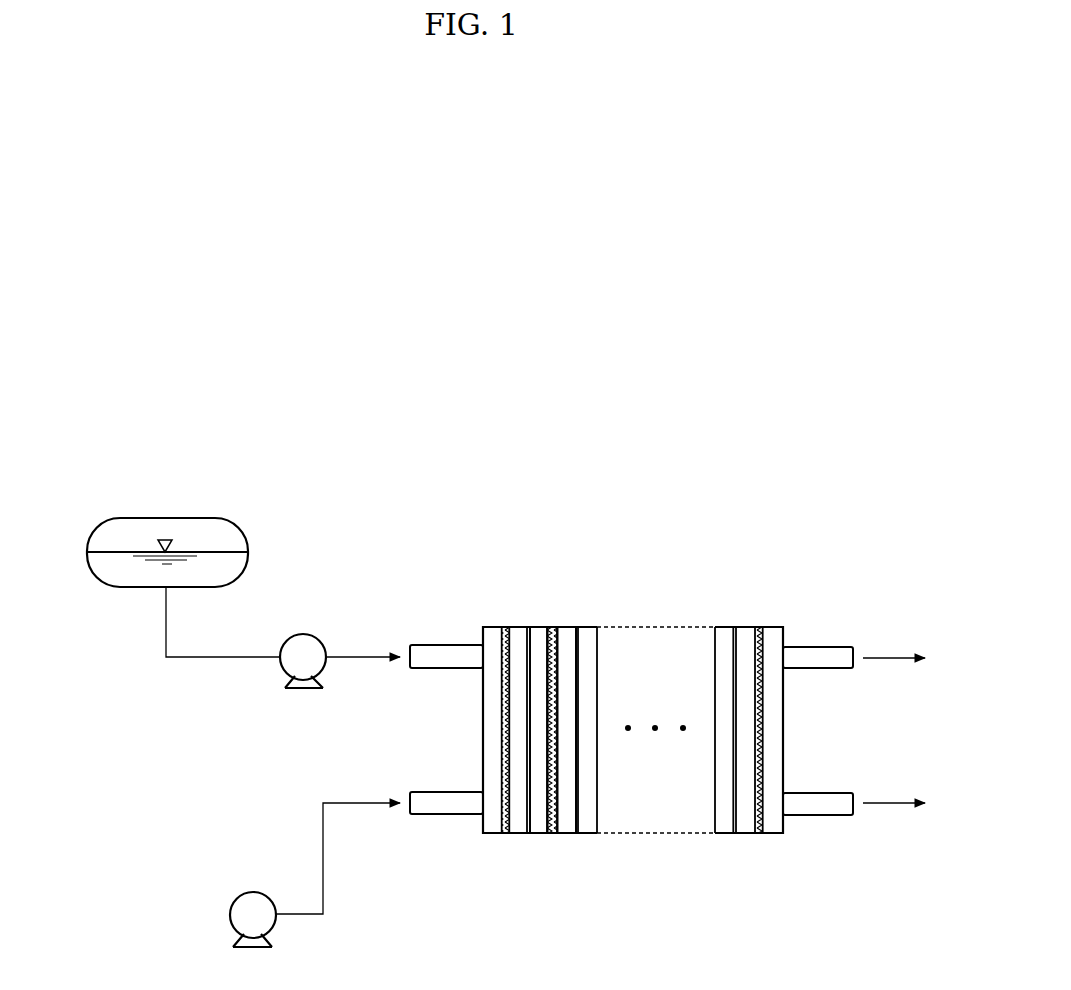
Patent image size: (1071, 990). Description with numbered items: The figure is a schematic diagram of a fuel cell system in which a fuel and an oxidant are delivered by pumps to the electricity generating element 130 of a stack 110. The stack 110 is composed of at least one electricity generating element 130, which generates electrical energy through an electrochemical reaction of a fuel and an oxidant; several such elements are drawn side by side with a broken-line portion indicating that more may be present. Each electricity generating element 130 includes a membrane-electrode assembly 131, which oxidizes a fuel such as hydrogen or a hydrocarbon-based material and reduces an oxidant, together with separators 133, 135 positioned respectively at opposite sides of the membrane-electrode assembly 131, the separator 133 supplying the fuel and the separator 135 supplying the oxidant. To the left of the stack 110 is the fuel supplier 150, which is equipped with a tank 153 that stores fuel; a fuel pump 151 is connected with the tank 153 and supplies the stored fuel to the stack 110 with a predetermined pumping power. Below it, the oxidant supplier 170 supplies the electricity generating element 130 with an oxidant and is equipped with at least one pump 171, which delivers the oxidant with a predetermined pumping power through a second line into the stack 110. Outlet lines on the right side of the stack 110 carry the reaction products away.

The stack 110 is at (667, 752).
The electricity generating element 130 is at (556, 796).
The membrane-electrode assembly 131 is at (557, 833).
The separator 133 is at (538, 833).
The separator 135 is at (596, 771).
The fuel supplier 150 is at (213, 553).
The fuel pump 151 is at (309, 632).
The tank 153 is at (167, 517).
The oxidant supplier 170 is at (260, 875).
The pump 171 is at (252, 892).